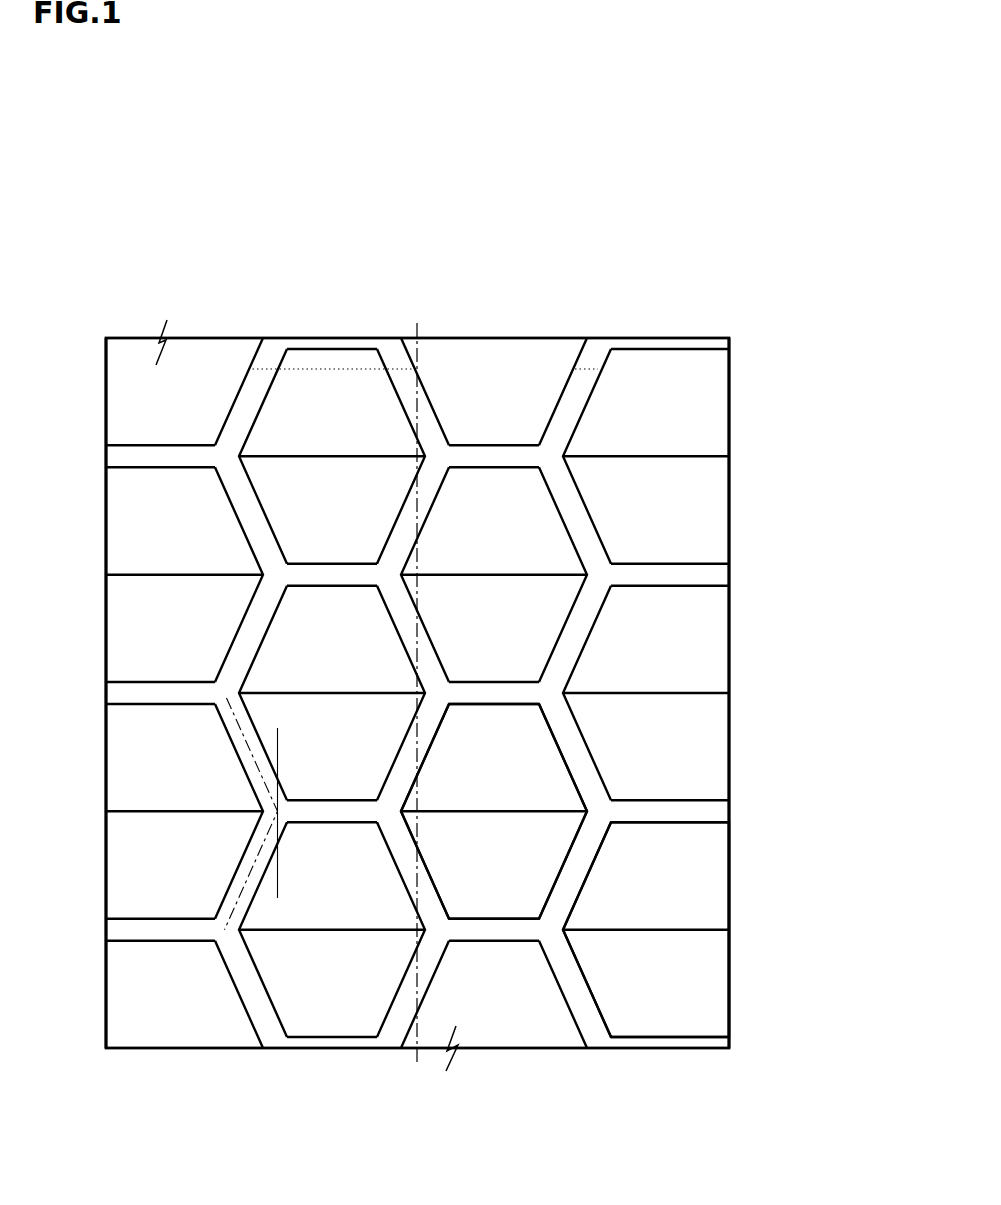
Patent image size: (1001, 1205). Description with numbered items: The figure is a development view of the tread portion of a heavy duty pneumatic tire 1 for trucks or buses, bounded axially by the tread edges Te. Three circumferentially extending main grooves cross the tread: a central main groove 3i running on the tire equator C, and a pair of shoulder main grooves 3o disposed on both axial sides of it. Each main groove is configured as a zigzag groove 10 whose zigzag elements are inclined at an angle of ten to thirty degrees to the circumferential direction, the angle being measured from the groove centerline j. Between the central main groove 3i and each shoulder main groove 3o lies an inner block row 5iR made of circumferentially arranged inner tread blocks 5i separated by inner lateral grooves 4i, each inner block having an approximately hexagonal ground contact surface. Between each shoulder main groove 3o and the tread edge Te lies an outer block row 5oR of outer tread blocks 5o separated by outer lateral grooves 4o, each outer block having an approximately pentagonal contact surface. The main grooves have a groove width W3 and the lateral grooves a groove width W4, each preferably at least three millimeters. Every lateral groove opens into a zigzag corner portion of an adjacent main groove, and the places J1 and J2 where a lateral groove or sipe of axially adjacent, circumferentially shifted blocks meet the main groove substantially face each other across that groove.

The pneumatic tire 1 is at (685, 271).
The tread edge Te is at (105, 370).
The shoulder main groove 3o is at (252, 425).
The central main groove 3i is at (425, 420).
The outer lateral groove 4o is at (673, 575).
The inner lateral groove 4i is at (490, 692).
The inner tread block 5i is at (525, 862).
The outer tread block 5o is at (693, 897).
The zigzag groove 10 is at (256, 398).
The place J2 is at (261, 440).
The place J1 is at (198, 446).
The tire equator C is at (417, 679).
The groove width of lateral grooves W4 is at (490, 478).
The groove width of main grooves W3 is at (434, 529).
The groove centerline j is at (255, 765).
The outer block row 5oR is at (174, 1066).
The inner block row 5iR is at (332, 1066).